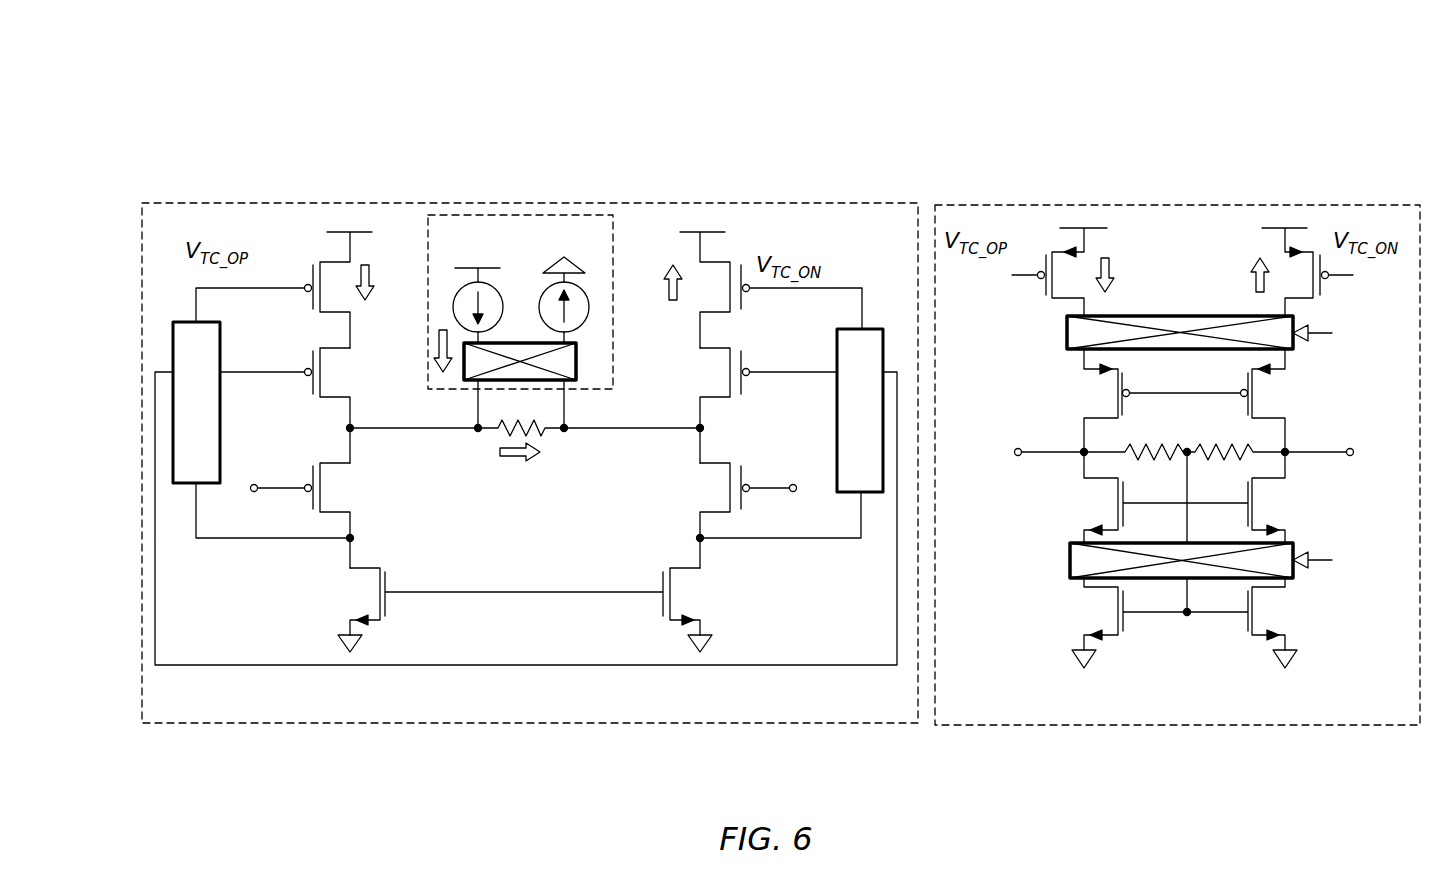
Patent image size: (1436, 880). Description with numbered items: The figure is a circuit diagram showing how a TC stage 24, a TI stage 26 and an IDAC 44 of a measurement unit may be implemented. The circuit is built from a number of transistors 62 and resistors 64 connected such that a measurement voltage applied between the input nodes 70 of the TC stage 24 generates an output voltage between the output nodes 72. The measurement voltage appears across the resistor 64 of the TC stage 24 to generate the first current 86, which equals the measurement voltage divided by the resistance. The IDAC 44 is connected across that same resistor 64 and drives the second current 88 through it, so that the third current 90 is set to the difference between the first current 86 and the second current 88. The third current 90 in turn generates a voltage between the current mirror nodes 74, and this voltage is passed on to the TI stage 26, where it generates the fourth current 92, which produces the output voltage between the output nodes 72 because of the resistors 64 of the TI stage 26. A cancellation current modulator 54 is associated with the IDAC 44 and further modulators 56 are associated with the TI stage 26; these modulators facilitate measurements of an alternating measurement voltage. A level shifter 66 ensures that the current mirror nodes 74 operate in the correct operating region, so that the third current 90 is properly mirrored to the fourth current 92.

The TC stage 24 is at (224, 165).
The TI stage 26 is at (986, 165).
The IDAC 44 is at (494, 185).
The cancellation current modulator 54 is at (576, 363).
The modulators 56 is at (1293, 345).
The transistors 62 is at (395, 546).
The resistors 64 is at (500, 430).
The level shifter 66 is at (173, 345).
The input nodes 70 is at (254, 492).
The output nodes 72 is at (1018, 456).
The current mirror nodes 74 is at (315, 232).
The first current 86 is at (525, 455).
The second current 88 is at (441, 328).
The third current 90 is at (372, 262).
The fourth current 92 is at (1258, 256).